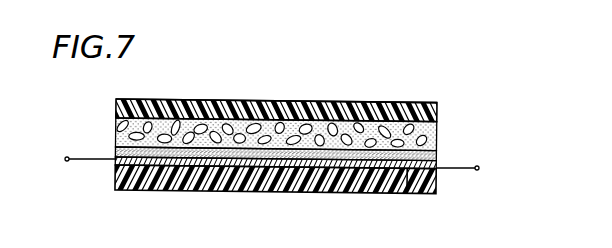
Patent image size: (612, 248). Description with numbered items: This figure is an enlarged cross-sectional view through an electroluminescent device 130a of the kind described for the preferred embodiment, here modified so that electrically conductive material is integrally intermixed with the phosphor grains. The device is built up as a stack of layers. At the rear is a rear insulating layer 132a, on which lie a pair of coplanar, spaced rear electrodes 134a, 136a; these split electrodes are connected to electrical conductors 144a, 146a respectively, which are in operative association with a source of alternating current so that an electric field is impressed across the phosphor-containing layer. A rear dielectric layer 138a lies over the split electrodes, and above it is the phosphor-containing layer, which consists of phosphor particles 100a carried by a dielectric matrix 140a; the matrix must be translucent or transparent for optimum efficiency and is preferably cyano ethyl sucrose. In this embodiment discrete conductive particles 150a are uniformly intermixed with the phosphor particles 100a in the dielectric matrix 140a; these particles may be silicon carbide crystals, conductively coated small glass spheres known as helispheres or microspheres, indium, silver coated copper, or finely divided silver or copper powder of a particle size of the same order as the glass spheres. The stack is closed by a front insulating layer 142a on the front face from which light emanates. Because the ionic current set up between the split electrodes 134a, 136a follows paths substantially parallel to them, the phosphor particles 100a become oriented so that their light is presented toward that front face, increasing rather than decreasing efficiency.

The phosphor particles 100a is at (130, 132).
The electroluminescent device 130a is at (147, 199).
The rear insulating layer 132a is at (173, 184).
The rear electrode 134a is at (244, 165).
The rear electrode 136a is at (328, 163).
The rear dielectric layer 138a is at (408, 168).
The dielectric matrix 140a is at (116, 119).
The front insulating layer 142a is at (190, 99).
The electrical conductor 144a is at (90, 159).
The electrical conductor 146a is at (467, 165).
The conductive particles 150a is at (290, 126).